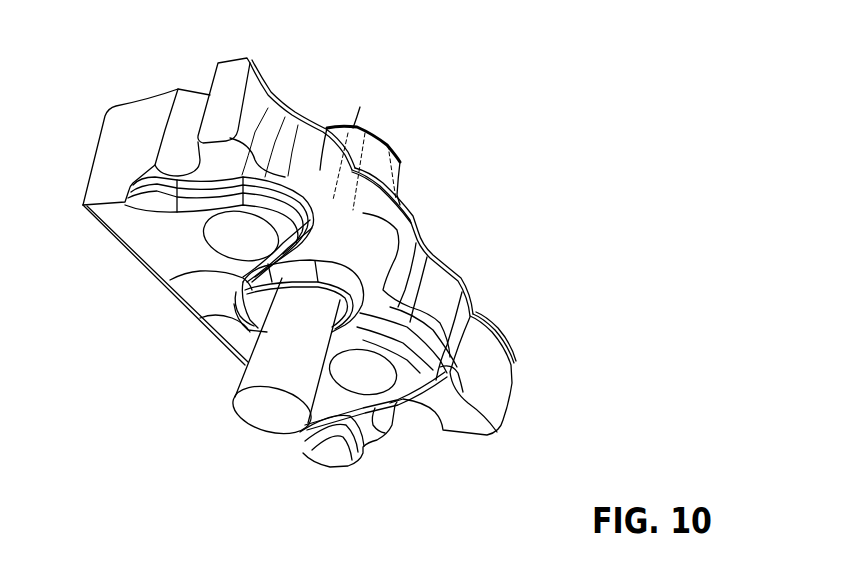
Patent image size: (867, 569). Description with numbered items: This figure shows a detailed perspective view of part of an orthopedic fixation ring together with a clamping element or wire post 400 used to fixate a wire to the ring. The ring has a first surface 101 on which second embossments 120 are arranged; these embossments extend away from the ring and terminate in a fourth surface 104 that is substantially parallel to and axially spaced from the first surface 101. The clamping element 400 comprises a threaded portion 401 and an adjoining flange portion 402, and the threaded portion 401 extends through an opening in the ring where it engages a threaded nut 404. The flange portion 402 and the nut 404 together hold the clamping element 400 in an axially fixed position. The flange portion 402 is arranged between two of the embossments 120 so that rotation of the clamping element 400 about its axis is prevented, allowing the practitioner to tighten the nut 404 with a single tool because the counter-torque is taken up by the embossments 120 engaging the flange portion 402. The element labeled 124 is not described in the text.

The first surface 101 is at (327, 248).
The fourth surface 104 is at (282, 222).
The second embossments 120 is at (170, 280).
The lower sloping face 124 is at (238, 333).
The clamping element 400 is at (278, 350).
The threaded portion 401 is at (360, 127).
The flange portion 402 is at (210, 319).
The threaded nut 404 is at (375, 162).